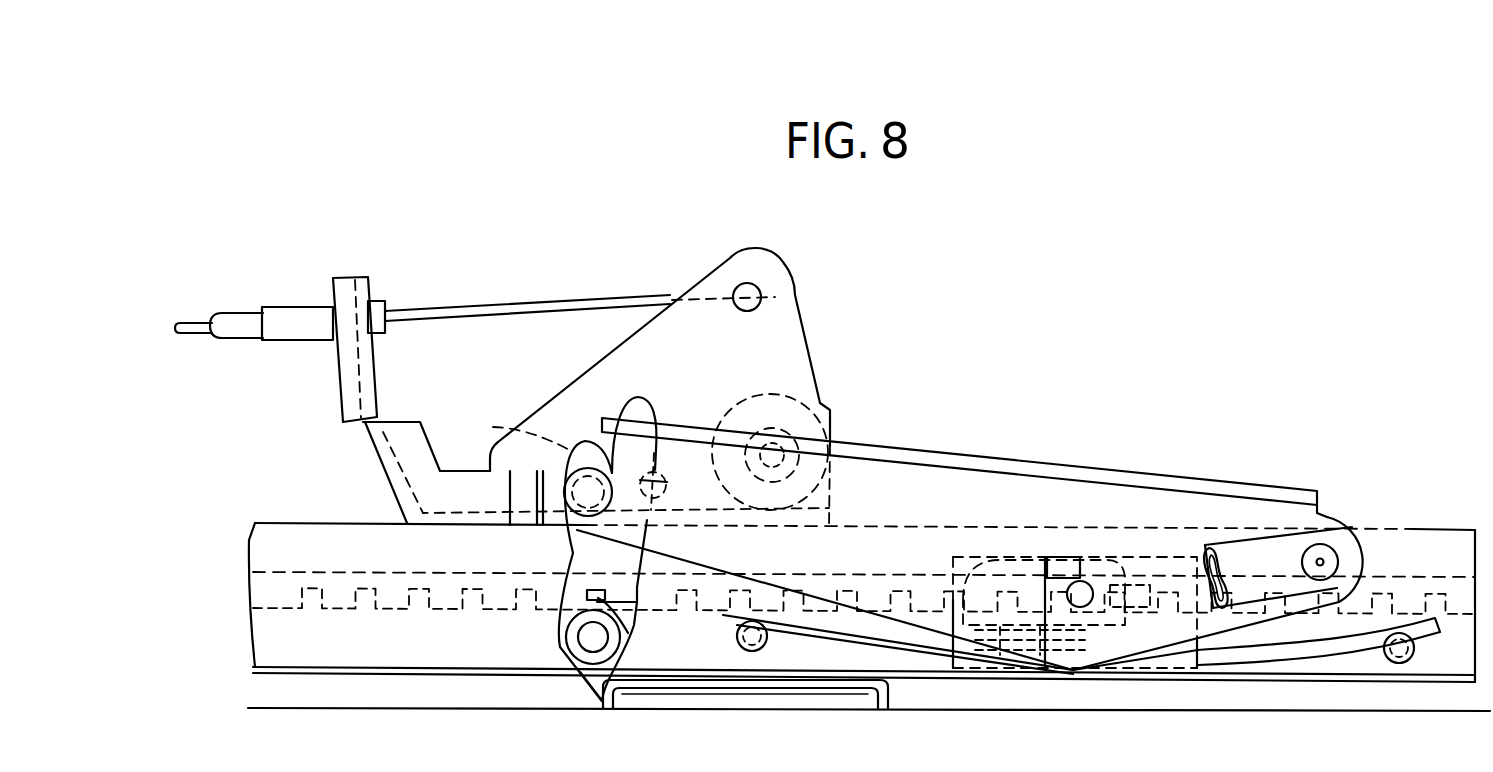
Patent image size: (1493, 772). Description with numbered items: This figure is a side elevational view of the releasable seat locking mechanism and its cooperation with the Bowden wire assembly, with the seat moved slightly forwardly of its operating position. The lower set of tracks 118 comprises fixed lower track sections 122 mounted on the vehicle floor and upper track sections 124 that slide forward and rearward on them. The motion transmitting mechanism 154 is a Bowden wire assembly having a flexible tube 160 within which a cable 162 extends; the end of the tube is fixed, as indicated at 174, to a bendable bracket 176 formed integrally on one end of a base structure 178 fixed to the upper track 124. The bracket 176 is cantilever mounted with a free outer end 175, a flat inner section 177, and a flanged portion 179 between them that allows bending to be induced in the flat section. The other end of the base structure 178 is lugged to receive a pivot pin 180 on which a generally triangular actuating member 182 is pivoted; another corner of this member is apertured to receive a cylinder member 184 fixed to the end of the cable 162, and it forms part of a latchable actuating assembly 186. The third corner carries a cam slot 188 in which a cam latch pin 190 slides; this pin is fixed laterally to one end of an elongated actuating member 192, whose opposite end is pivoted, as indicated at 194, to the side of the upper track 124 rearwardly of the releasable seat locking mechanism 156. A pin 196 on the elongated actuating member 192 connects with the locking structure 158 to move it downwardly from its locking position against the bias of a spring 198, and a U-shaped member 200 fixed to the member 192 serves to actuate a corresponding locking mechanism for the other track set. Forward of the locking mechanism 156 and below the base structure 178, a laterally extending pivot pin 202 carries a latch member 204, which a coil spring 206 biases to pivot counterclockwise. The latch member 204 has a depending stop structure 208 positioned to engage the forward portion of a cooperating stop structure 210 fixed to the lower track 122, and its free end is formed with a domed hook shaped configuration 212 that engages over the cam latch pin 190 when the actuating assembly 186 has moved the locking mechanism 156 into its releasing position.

The lower set of tracks 118 is at (242, 532).
The lower track sections 122 is at (328, 672).
The upper track sections 124 is at (293, 537).
The motion transmitting mechanism 154 is at (308, 314).
The releasable seat locking mechanism 156 is at (1020, 678).
The locking structure 158 is at (1148, 668).
The flexible tube 160 is at (232, 334).
The cable 162 is at (520, 298).
The fixed end of flexible tube 174 is at (295, 318).
The free outer end 175 is at (357, 278).
The bendable bracket 176 is at (392, 428).
The flat inner section 177 is at (433, 417).
The base structure 178 is at (500, 527).
The flanged portion 179 is at (373, 361).
The pivot pin 180 is at (825, 400).
The actuating member 182 is at (795, 345).
The cylinder member 184 is at (758, 290).
The latchable actuating assembly 186 is at (613, 332).
The cam slot 188 is at (715, 392).
The cam latch pin 190 is at (620, 410).
The elongated actuating member 192 is at (968, 493).
The pivot 194 is at (1322, 561).
The pin 196 is at (1082, 593).
The spring 198 is at (1312, 648).
The U-shaped member 200 is at (1271, 558).
The pivot pin 202 is at (590, 640).
The latch member 204 is at (597, 558).
The coil spring 206 is at (628, 633).
The stop structure 208 is at (574, 684).
The stop structure 210 is at (758, 682).
The domed hook shaped configuration 212 is at (520, 421).